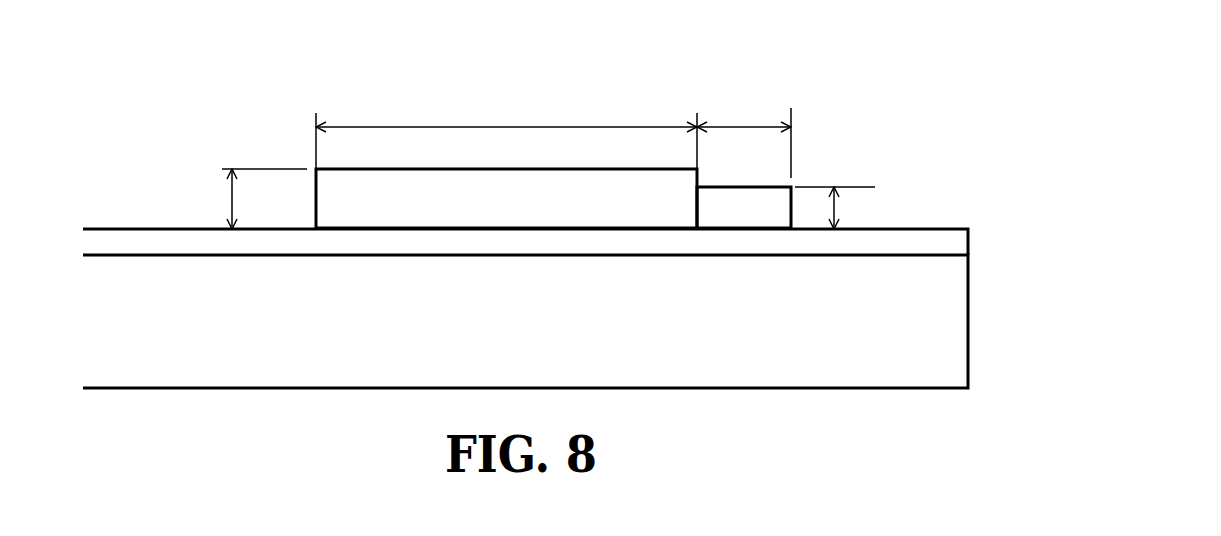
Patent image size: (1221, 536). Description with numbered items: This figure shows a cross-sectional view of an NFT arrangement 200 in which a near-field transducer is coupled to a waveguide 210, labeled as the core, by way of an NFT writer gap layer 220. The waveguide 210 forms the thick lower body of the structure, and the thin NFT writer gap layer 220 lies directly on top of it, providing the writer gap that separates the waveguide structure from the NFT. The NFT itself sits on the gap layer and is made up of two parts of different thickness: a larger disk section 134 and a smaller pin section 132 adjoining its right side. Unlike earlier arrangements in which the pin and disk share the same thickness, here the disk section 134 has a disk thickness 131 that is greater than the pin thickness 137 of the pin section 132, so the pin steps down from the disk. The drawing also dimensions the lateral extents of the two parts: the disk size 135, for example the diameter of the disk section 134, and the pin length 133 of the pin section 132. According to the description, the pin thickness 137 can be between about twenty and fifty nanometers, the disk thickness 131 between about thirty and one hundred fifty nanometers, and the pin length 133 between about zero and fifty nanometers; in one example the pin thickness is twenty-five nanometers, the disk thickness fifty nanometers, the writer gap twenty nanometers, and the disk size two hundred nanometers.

The NFT arrangement 200 is at (168, 80).
The waveguide 210 is at (525, 321).
The NFT writer gap layer 220 is at (932, 242).
The disk section 134 is at (517, 210).
The pin section 132 is at (745, 219).
The disk size 135 is at (506, 132).
The pin length 133 is at (744, 138).
The disk thickness 131 is at (232, 199).
The pin thickness 137 is at (846, 208).